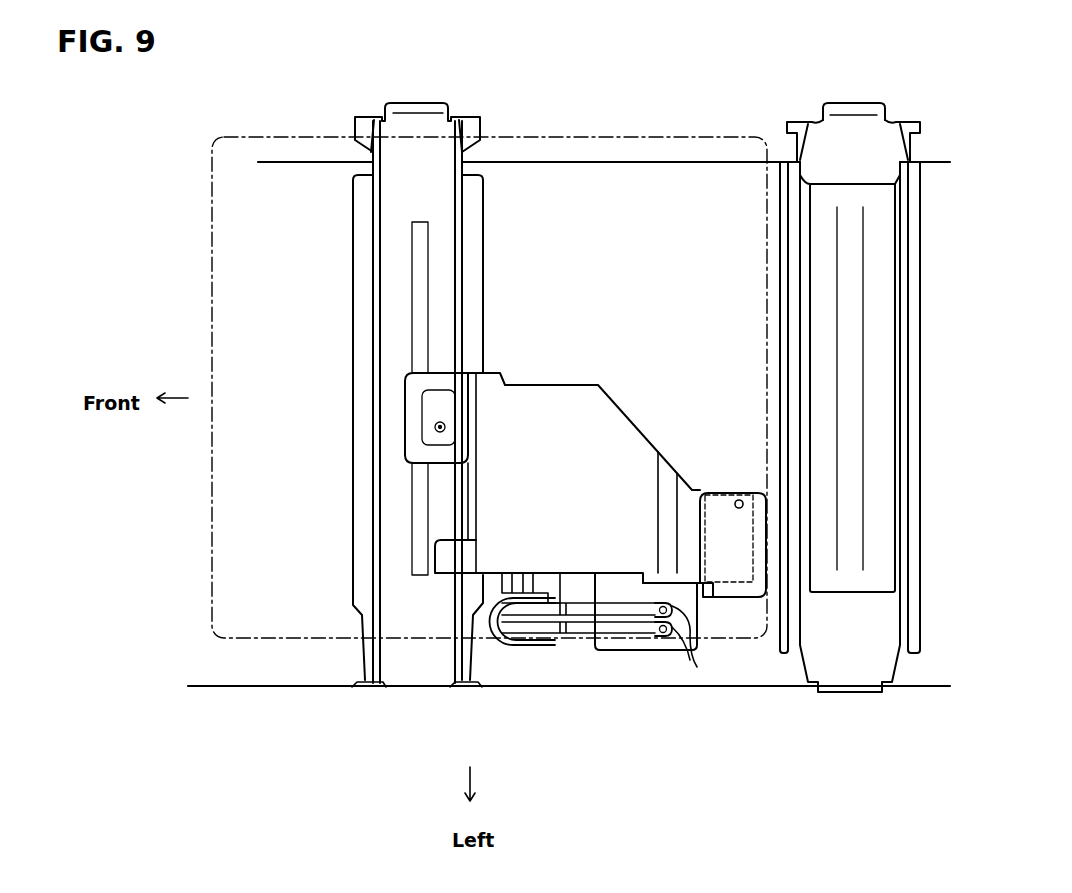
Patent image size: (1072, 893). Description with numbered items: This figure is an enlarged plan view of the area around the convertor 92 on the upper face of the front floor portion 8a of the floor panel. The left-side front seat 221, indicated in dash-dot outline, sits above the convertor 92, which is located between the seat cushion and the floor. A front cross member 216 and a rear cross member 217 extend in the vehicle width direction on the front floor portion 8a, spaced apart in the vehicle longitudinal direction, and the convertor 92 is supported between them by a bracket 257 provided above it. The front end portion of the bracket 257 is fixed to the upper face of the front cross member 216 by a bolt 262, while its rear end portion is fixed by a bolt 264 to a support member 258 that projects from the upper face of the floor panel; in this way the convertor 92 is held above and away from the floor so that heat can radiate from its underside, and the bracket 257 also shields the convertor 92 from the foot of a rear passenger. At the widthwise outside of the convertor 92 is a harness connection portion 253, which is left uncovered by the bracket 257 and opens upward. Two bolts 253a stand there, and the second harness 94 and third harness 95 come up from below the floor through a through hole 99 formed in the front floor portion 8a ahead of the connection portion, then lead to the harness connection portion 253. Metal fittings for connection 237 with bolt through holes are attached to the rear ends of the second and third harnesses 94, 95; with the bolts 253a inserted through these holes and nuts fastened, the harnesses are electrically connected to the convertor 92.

The front floor portion 8a is at (287, 675).
The front seat 221 is at (280, 137).
The front cross member 216 is at (340, 476).
The rear cross member 217 is at (943, 387).
The bracket 257 is at (702, 463).
The bolt 262 is at (446, 427).
The bolt 264 is at (736, 501).
The support member 258 is at (753, 532).
The harness connection portion 253 is at (620, 588).
The bolt 253a is at (666, 619).
The metal fitting for connection 237 is at (697, 667).
The through hole 99 is at (509, 646).
The convertor 92 is at (582, 598).
The second harness 94 is at (630, 616).
The third harness 95 is at (608, 634).